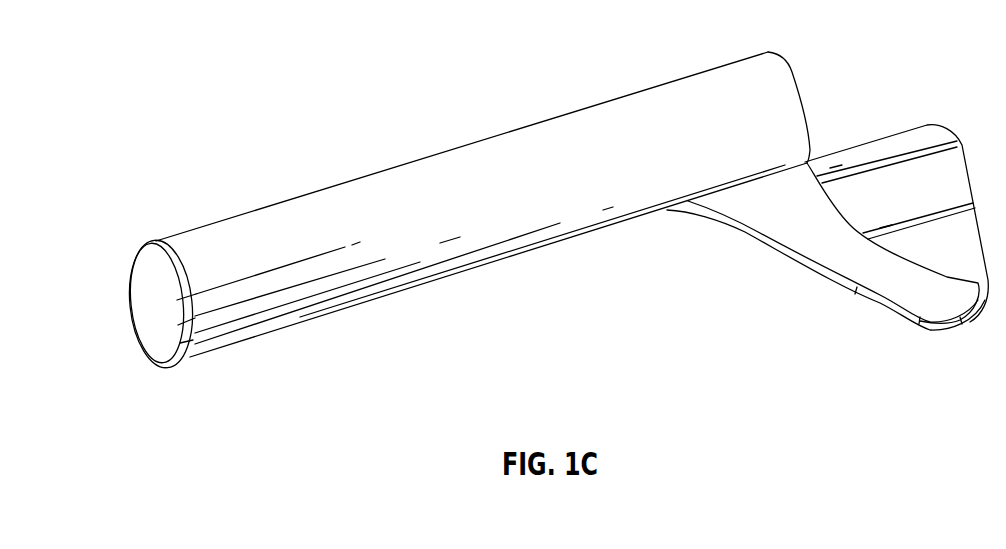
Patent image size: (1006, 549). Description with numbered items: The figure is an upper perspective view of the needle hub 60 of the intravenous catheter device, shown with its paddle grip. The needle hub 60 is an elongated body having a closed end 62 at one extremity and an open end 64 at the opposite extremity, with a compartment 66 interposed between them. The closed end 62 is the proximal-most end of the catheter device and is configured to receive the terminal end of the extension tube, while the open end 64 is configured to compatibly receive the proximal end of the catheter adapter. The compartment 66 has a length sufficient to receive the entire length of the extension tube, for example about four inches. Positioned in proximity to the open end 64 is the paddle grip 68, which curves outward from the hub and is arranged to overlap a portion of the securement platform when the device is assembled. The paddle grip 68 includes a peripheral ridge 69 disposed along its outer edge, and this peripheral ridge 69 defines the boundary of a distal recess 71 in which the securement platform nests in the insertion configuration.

The needle hub 60 is at (547, 120).
The closed end 62 is at (150, 307).
The open end 64 is at (787, 62).
The compartment 66 is at (535, 238).
The paddle grip 68 is at (817, 272).
The peripheral ridge 69 is at (840, 242).
The distal recess 71 is at (922, 140).